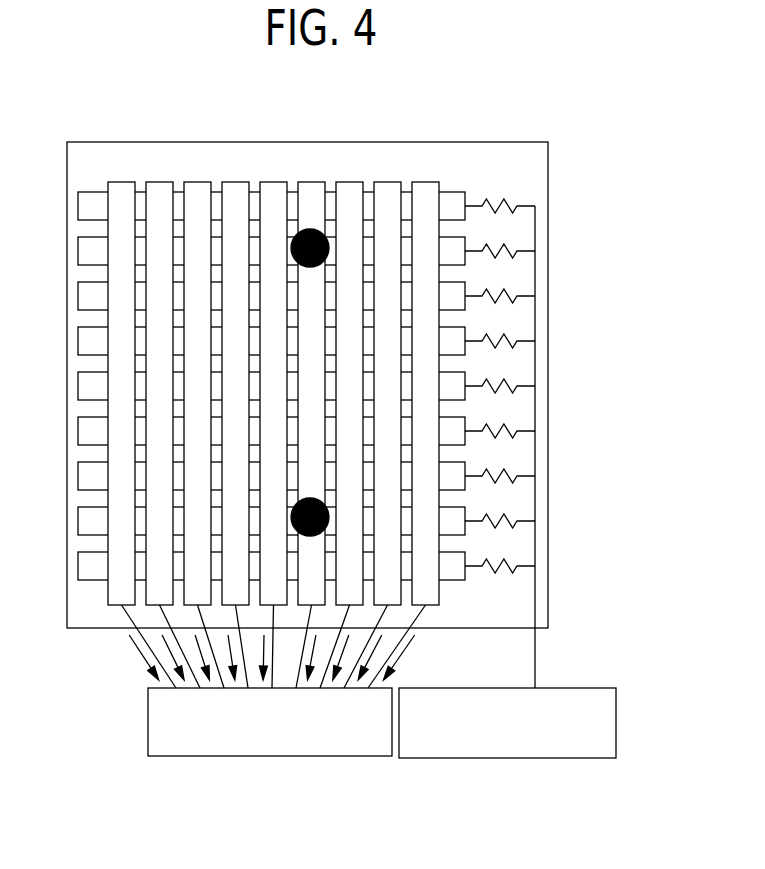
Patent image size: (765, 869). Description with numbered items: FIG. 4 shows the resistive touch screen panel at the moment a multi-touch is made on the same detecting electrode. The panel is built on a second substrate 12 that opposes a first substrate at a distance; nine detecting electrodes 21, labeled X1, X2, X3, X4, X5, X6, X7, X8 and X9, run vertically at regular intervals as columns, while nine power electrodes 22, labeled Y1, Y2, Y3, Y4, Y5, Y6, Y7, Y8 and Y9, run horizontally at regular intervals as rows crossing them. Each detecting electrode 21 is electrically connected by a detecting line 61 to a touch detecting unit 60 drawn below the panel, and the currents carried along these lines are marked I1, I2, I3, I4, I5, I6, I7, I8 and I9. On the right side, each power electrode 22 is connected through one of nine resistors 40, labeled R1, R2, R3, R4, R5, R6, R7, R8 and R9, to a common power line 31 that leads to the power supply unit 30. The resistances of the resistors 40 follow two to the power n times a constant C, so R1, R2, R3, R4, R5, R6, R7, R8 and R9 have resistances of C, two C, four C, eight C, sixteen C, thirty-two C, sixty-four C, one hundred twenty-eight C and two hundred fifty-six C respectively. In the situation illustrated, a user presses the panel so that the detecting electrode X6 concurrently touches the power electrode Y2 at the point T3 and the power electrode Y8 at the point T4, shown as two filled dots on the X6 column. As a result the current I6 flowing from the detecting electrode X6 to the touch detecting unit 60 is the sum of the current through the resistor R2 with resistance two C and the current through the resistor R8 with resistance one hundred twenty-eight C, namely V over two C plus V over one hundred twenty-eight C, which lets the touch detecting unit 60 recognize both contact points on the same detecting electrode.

The second substrate 12 is at (548, 607).
The detecting electrodes 21 is at (273, 351).
The power electrodes 22 is at (232, 386).
The resistors 40 is at (555, 373).
The power lines 31 is at (535, 657).
The detecting lines 61 is at (140, 633).
The touch detecting unit 60 is at (270, 756).
The power supply unit 30 is at (505, 758).
The contact point T3 is at (310, 229).
The contact point T4 is at (318, 534).
The detecting electrode X1 is at (122, 377).
The detecting electrode X2 is at (160, 377).
The detecting electrode X3 is at (198, 377).
The detecting electrode X4 is at (236, 377).
The detecting electrode X5 is at (274, 377).
The detecting electrode X6 is at (312, 377).
The detecting electrode X7 is at (350, 377).
The detecting electrode X8 is at (388, 377).
The detecting electrode X9 is at (426, 377).
The power electrode Y1 is at (249, 206).
The power electrode Y2 is at (249, 251).
The power electrode Y3 is at (249, 296).
The power electrode Y4 is at (249, 341).
The power electrode Y5 is at (249, 386).
The power electrode Y6 is at (249, 431).
The power electrode Y7 is at (249, 476).
The power electrode Y8 is at (249, 521).
The power electrode Y9 is at (249, 566).
The resistor R1 is at (511, 198).
The resistor R2 is at (511, 243).
The resistor R3 is at (511, 288).
The resistor R4 is at (511, 333).
The resistor R5 is at (511, 378).
The resistor R6 is at (511, 423).
The resistor R7 is at (511, 468).
The resistor R8 is at (511, 513).
The resistor R9 is at (533, 552).
The current I1 is at (140, 657).
The current I2 is at (165, 655).
The current I3 is at (194, 655).
The current I4 is at (223, 656).
The current I5 is at (254, 656).
The current I6 is at (319, 655).
The current I7 is at (347, 655).
The current I8 is at (375, 655).
The current I9 is at (401, 657).